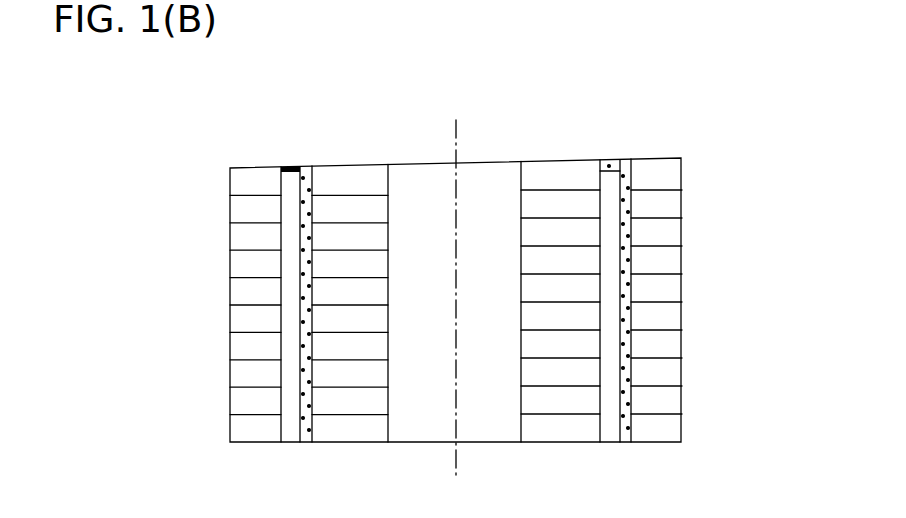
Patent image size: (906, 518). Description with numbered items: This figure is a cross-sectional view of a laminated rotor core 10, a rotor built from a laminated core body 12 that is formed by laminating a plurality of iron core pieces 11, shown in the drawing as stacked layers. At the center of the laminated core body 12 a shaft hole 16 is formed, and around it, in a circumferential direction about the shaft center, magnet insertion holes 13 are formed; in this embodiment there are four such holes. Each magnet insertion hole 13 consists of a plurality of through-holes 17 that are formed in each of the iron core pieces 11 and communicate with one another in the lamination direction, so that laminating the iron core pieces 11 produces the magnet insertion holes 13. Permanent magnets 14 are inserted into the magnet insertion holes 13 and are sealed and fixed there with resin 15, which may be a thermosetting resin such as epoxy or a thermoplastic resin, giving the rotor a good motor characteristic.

The laminated rotor core 10 is at (468, 270).
The iron core pieces 11 is at (670, 232).
The laminated core body 12 is at (683, 156).
The magnet insertion holes 13 is at (300, 224).
The permanent magnets 14 is at (296, 170).
The resin 15 is at (306, 170).
The shaft hole 16 is at (390, 207).
The through-holes 17 is at (282, 343).